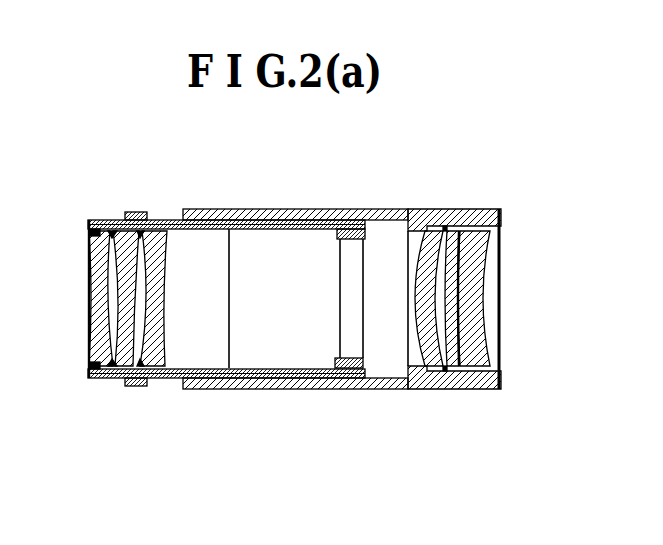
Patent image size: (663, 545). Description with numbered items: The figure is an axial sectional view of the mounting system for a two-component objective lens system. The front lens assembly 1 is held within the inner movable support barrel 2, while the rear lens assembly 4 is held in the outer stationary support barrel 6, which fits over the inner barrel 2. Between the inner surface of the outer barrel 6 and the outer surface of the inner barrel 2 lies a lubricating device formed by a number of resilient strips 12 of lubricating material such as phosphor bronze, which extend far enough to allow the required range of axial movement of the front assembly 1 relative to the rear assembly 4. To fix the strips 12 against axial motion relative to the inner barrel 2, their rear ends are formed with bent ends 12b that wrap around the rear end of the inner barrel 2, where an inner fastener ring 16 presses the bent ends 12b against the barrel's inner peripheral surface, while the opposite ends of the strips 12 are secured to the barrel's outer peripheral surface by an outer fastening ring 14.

The front lens assembly 1 is at (105, 294).
The inner barrel 2 is at (91, 219).
The rear lens assembly 4 is at (467, 287).
The outer barrel 6 is at (458, 210).
The resilient strips 12 is at (256, 209).
The bent ends 12b is at (377, 221).
The outer fastening ring 14 is at (131, 212).
The inner fastener ring 16 is at (344, 226).